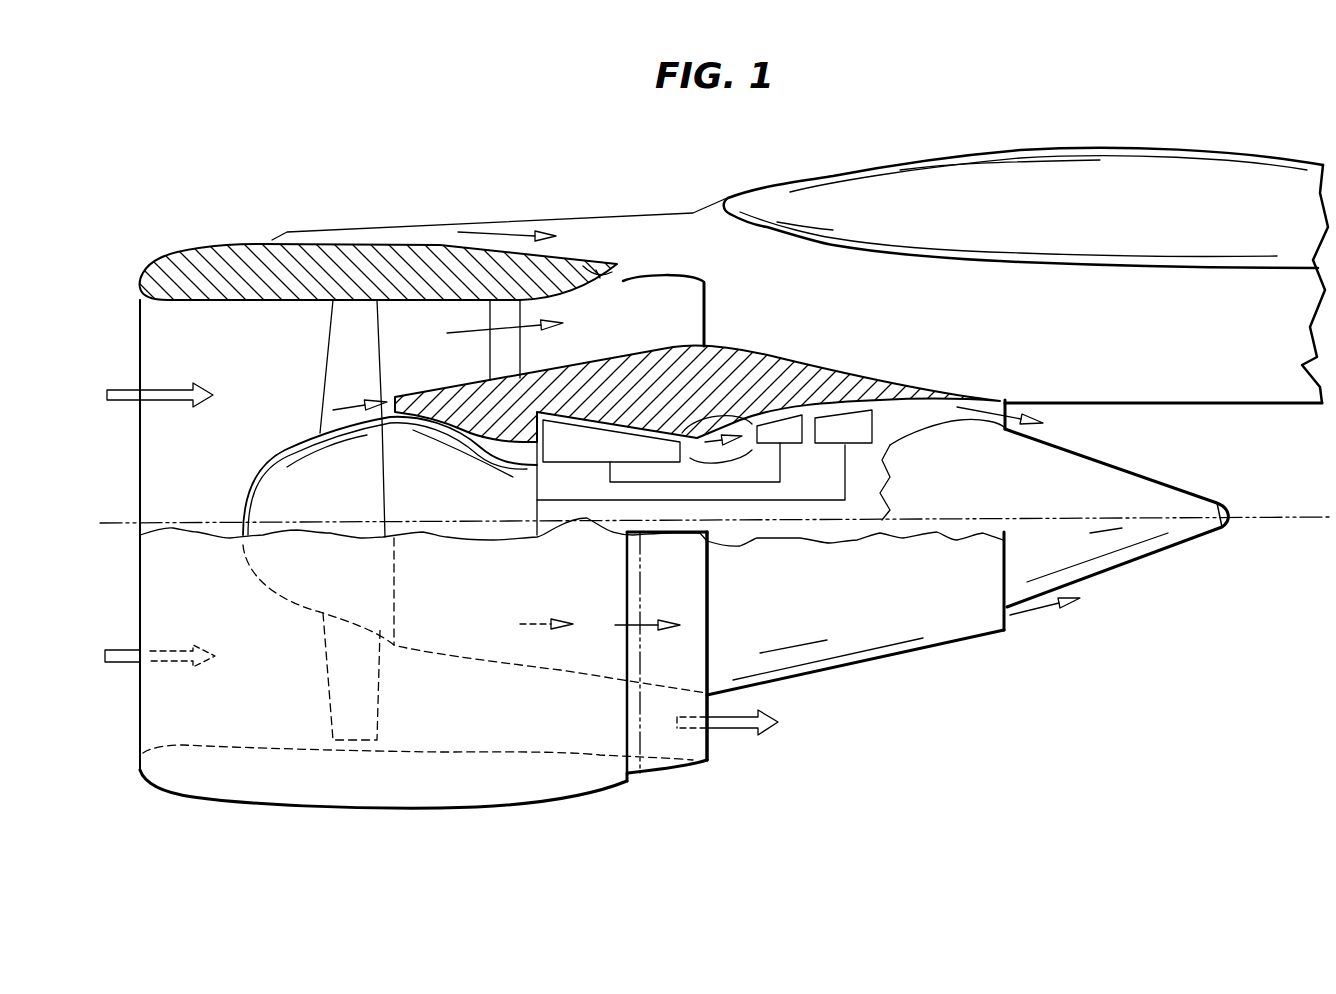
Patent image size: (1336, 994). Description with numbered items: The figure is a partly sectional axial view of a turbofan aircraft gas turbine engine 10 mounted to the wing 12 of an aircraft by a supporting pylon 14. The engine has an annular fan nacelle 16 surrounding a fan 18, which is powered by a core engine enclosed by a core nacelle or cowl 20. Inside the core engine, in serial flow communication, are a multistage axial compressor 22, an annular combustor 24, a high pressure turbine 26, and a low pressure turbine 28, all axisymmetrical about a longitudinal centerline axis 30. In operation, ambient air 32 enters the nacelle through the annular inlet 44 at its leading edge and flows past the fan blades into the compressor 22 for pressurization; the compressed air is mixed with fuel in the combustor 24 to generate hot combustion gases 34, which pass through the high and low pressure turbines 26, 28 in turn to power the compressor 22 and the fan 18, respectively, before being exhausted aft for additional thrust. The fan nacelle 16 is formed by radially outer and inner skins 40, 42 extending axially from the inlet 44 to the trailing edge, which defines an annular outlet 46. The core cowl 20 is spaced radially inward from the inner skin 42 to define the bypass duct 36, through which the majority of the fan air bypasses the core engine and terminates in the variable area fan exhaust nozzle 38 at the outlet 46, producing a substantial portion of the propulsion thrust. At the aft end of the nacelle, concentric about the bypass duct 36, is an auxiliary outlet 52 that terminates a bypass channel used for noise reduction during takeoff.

The turbofan aircraft gas turbine engine 10 is at (240, 226).
The wing 12 is at (870, 155).
The supporting pylon 14 is at (1175, 351).
The fan nacelle 16 is at (197, 798).
The fan 18 is at (328, 362).
The core nacelle or cowl 20 is at (900, 385).
The multistage axial compressor 22 is at (562, 448).
The annular combustor 24 is at (723, 460).
The high pressure turbine 26 is at (787, 447).
The low pressure turbine 28 is at (865, 447).
The longitudinal or axial centerline axis 30 is at (1277, 518).
The ambient air 32 is at (483, 237).
The hot combustion gases 34 is at (1027, 612).
The bypass duct 36 is at (473, 372).
The fan exhaust nozzle 38 is at (607, 236).
The outer cowling or skin 40 is at (350, 240).
The inner cowling or skin 42 is at (452, 300).
The annular inlet 44 is at (138, 345).
The annular outlet 46 is at (707, 307).
The auxiliary outlet 52 is at (630, 780).